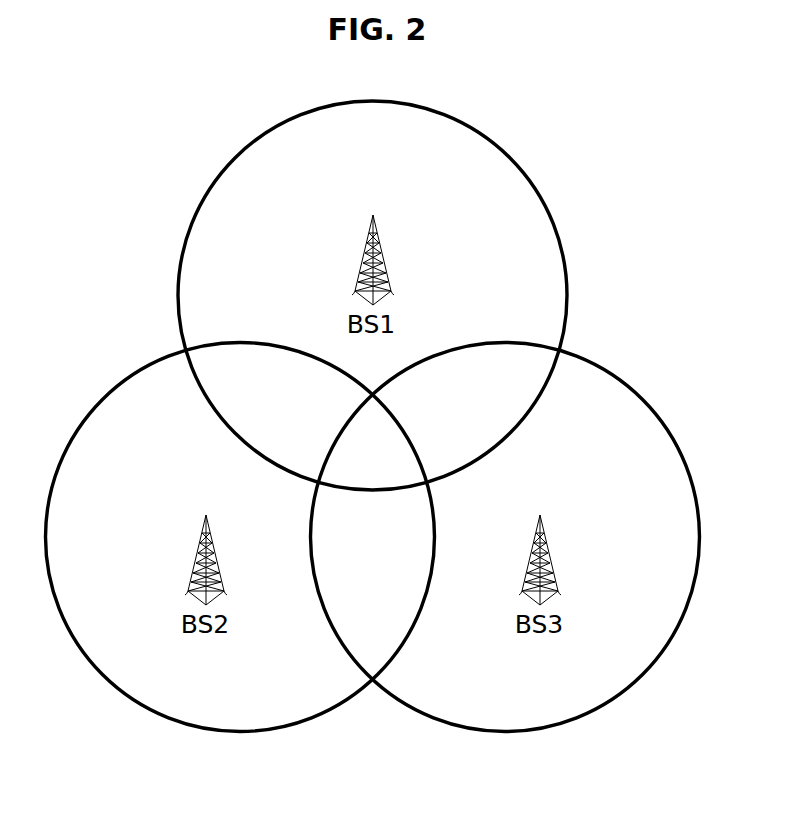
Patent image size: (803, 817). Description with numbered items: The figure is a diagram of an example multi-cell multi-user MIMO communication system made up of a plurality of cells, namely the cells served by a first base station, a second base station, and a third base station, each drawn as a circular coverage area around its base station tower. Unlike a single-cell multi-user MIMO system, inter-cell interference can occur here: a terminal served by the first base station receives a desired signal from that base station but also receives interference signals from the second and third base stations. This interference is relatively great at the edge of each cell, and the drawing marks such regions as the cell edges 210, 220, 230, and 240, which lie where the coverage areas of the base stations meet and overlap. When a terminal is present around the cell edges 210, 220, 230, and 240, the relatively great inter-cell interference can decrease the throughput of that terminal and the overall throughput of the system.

The cell edge 210 is at (243, 352).
The cell edge 220 is at (372, 295).
The cell edge 230 is at (500, 353).
The cell edge 240 is at (380, 645).